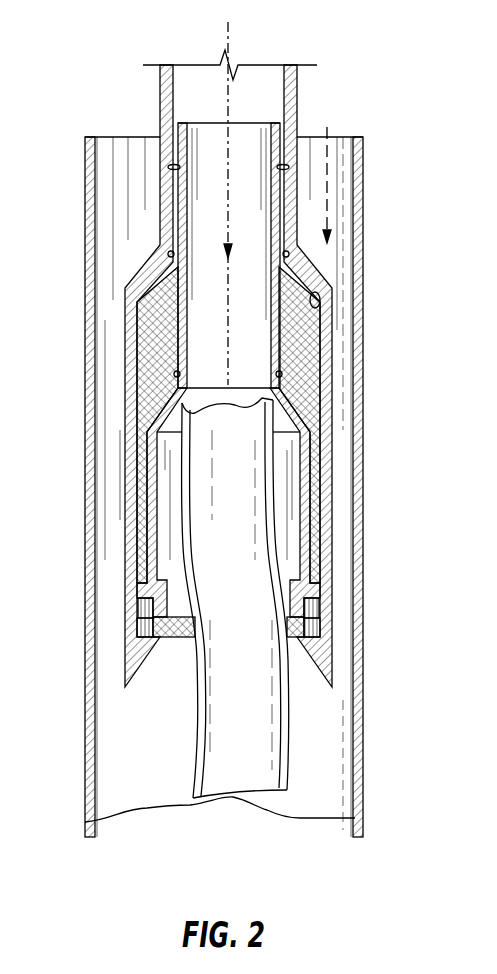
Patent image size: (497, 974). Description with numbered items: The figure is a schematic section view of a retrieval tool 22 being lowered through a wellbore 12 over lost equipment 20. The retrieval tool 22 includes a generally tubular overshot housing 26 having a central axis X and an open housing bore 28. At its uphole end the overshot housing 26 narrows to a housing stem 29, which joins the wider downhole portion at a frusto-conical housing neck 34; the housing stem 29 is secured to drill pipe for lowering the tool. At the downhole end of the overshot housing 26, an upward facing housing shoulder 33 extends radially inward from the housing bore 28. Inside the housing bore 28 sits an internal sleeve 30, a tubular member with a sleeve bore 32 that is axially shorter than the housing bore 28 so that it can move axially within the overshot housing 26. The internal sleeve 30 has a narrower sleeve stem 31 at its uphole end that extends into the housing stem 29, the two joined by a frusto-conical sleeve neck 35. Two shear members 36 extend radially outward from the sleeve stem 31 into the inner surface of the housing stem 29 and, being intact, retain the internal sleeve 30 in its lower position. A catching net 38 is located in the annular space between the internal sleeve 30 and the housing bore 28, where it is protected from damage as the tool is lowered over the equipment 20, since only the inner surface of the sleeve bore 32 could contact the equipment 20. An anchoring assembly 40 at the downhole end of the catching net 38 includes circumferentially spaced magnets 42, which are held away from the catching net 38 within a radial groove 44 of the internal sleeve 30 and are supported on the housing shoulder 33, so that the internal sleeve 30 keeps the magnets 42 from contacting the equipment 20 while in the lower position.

The wellbore 12 is at (342, 397).
The equipment 20 is at (287, 710).
The retrieval tool 22 is at (106, 456).
The overshot housing 26 is at (325, 557).
The housing bore 28 is at (323, 311).
The housing stem 29 is at (163, 107).
The internal sleeve 30 is at (305, 520).
The sleeve stem 31 is at (181, 291).
The sleeve bore 32 is at (287, 473).
The housing shoulder 33 is at (310, 628).
The housing neck 34 is at (157, 245).
The sleeve neck 35 is at (167, 393).
The shear member 36 is at (284, 167).
The catching net 38 is at (307, 367).
The anchoring assembly 40 is at (138, 620).
The magnets 42 is at (140, 630).
The radial groove 44 is at (302, 607).
The central axis X is at (228, 40).